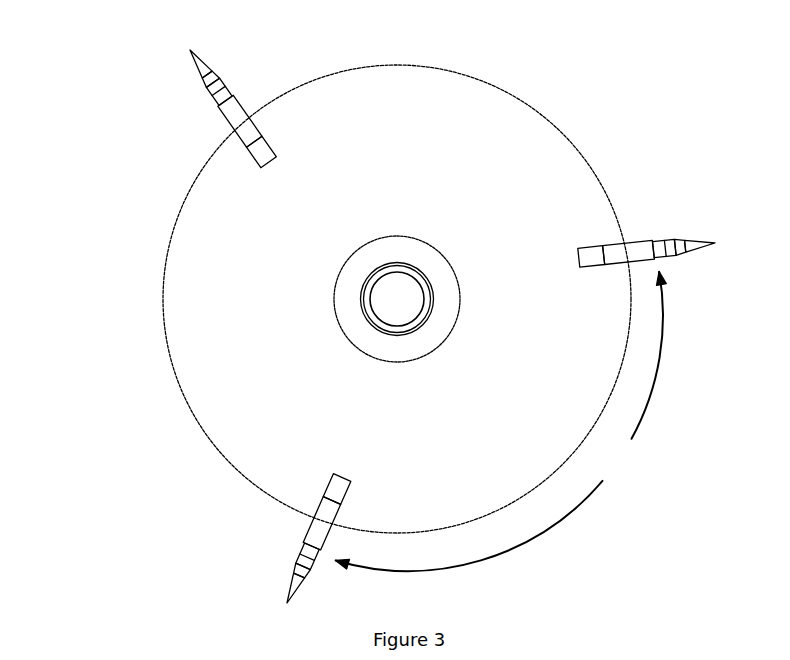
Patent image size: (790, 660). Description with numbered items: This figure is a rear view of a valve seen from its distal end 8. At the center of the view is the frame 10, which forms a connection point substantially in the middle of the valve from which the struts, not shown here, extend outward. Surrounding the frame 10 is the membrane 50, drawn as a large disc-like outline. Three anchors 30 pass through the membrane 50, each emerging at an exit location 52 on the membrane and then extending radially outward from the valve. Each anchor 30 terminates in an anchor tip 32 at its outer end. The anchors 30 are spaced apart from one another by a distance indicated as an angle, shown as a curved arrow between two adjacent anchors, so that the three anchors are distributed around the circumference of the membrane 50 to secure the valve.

The distal end 8 is at (326, 301).
The frame 10 is at (373, 320).
The anchor 30 is at (240, 100).
The anchor tip 32 is at (190, 51).
The membrane 50 is at (195, 222).
The exit location 52 is at (576, 226).